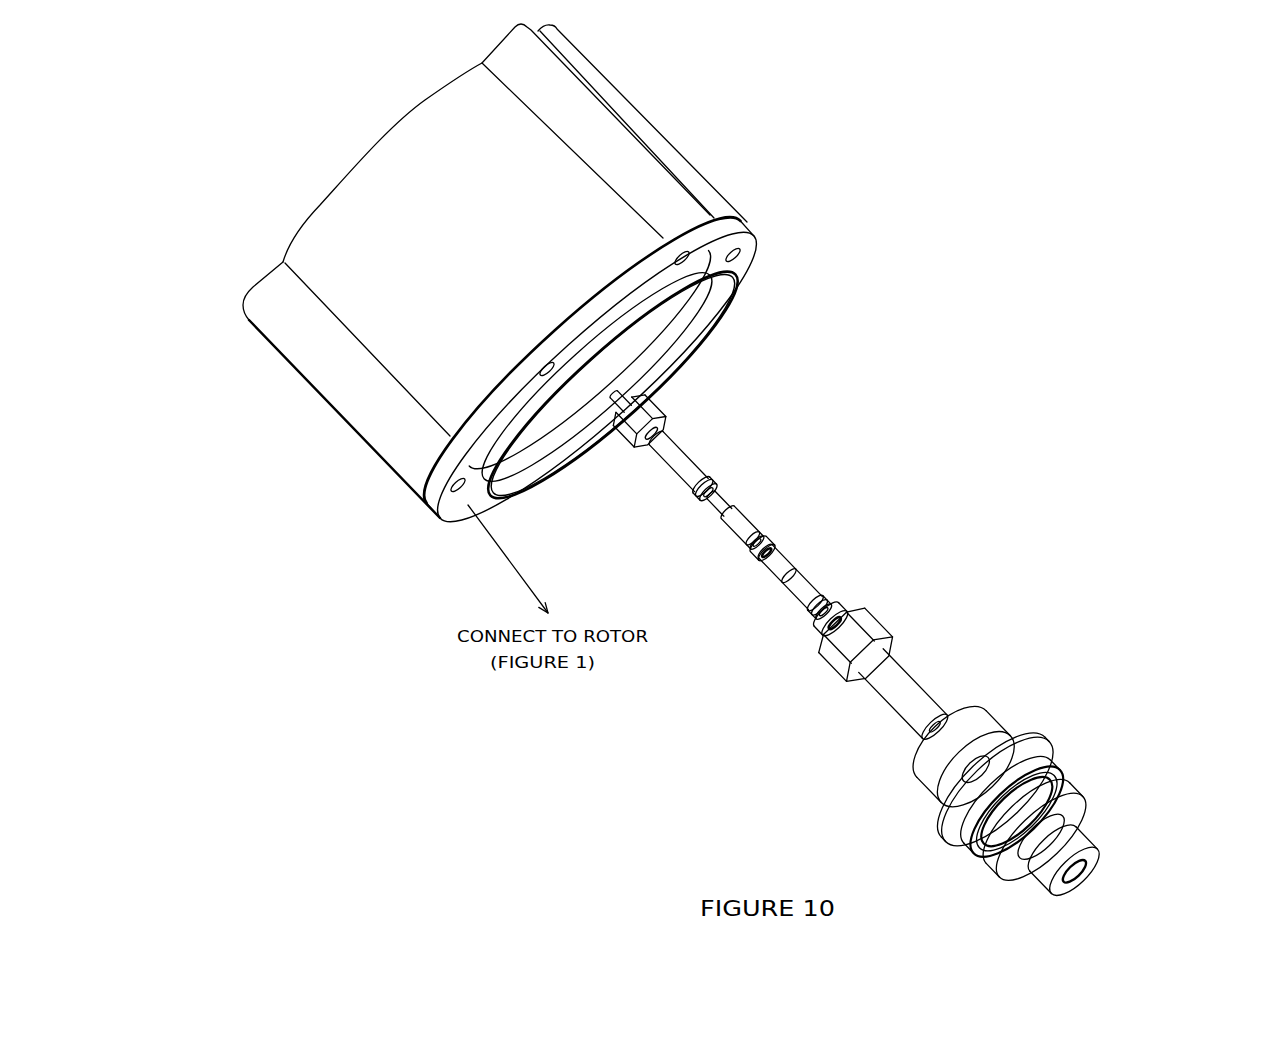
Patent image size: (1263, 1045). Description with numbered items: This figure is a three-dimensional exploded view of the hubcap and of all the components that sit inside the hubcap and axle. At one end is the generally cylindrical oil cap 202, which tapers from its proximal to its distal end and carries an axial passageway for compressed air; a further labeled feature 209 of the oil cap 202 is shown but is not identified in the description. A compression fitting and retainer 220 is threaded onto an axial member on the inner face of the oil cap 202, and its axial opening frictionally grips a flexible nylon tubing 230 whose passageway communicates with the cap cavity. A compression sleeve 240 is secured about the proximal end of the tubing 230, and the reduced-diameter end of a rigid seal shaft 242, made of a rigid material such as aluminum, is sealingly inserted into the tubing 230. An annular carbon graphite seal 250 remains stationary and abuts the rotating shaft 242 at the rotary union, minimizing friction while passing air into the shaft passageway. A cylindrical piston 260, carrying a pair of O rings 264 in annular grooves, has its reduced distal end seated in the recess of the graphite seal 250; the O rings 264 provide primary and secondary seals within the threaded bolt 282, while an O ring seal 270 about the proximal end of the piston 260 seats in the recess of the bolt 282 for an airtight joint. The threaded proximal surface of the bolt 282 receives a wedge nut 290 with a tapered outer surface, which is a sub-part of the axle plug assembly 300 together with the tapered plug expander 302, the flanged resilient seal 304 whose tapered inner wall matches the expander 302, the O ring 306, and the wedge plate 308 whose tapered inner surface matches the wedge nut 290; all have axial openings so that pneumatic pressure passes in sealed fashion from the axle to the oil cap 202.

The oil cap 202 is at (692, 170).
The mounting hole 209 is at (455, 500).
The compression fitting and retainer 220 is at (658, 405).
The flexible nylon tubing 230 is at (690, 457).
The compression sleeve 240 is at (703, 473).
The rigid seal shaft 242 is at (732, 508).
The carbon graphite seal 250 is at (765, 538).
The cylindrical piston 260 is at (787, 562).
The O rings 264 is at (787, 578).
The O ring seal 270 is at (840, 603).
The threaded bolt 282 is at (913, 670).
The wedge nut 290 is at (1093, 853).
The axle plug assembly 300 is at (1071, 725).
The tapered plug expander 302 is at (1000, 722).
The flanged resilient seal 304 is at (1048, 738).
The O ring 306 is at (1068, 788).
The wedge plate 308 is at (1065, 827).